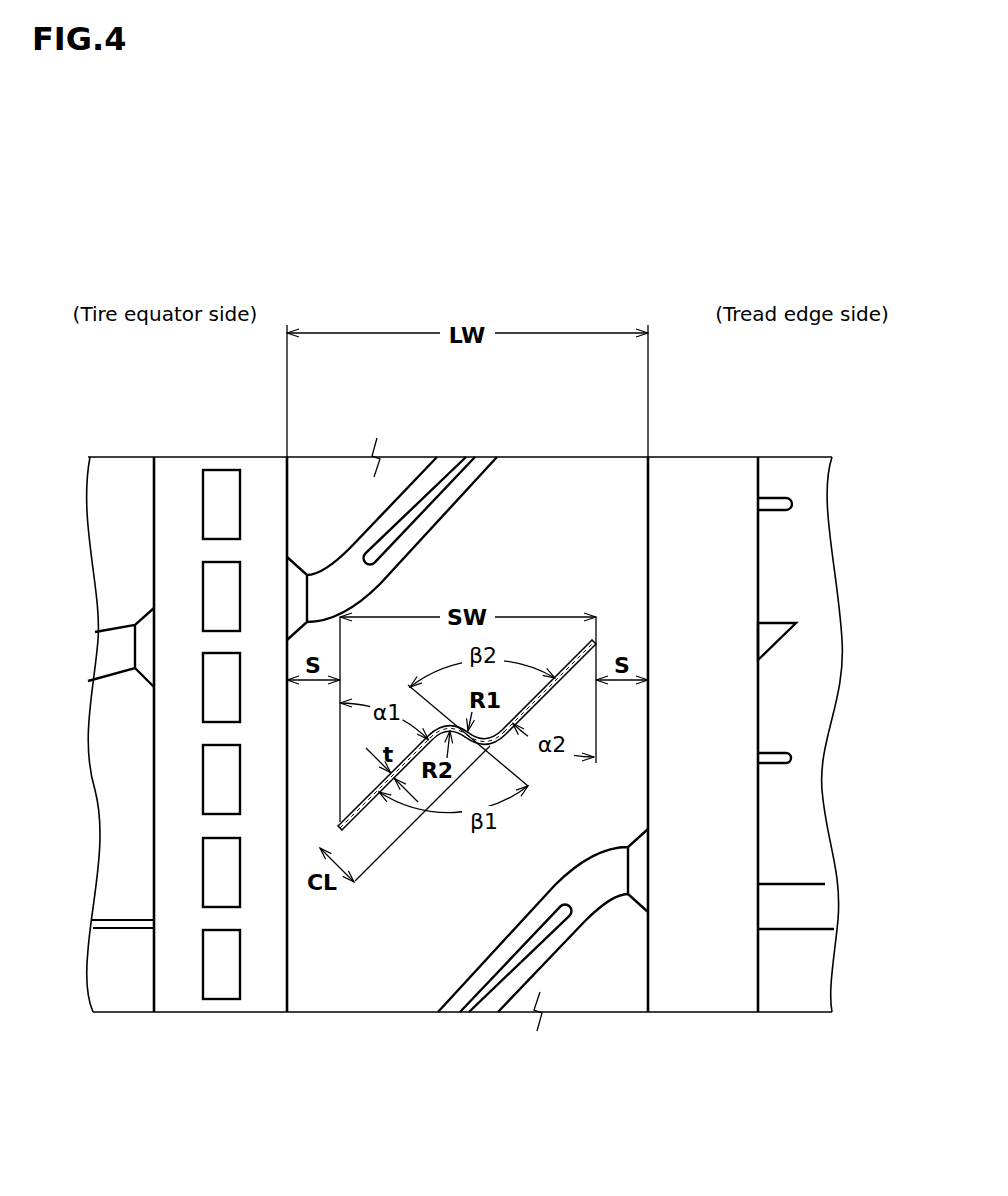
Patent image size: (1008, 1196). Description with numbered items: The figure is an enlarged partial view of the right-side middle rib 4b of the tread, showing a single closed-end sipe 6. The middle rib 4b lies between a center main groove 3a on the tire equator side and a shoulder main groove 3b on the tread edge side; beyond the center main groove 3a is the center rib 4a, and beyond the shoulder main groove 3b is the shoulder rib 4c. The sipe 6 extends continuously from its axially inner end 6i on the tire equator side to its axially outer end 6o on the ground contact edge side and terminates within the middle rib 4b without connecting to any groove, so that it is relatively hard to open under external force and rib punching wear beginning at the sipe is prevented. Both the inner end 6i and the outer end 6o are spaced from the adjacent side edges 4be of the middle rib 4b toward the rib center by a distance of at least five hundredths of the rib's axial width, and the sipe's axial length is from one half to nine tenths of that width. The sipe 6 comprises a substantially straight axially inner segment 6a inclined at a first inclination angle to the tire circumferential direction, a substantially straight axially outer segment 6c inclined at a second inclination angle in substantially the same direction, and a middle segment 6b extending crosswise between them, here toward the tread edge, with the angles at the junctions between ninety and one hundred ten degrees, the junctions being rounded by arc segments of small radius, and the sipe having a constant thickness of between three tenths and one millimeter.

The center rib 4a is at (118, 495).
The center main groove 3a is at (190, 495).
The middle rib 4b is at (523, 495).
The side edge of the middle rib 4be is at (286, 950).
The shoulder main groove 3b is at (700, 495).
The shoulder rib 4c is at (800, 495).
The sipe 6 is at (376, 775).
The axially inner segment 6a is at (365, 818).
The middle segment 6b is at (456, 750).
The axially outer segment 6c is at (562, 690).
The axially inner end 6i is at (338, 830).
The axially outer end 6o is at (594, 637).